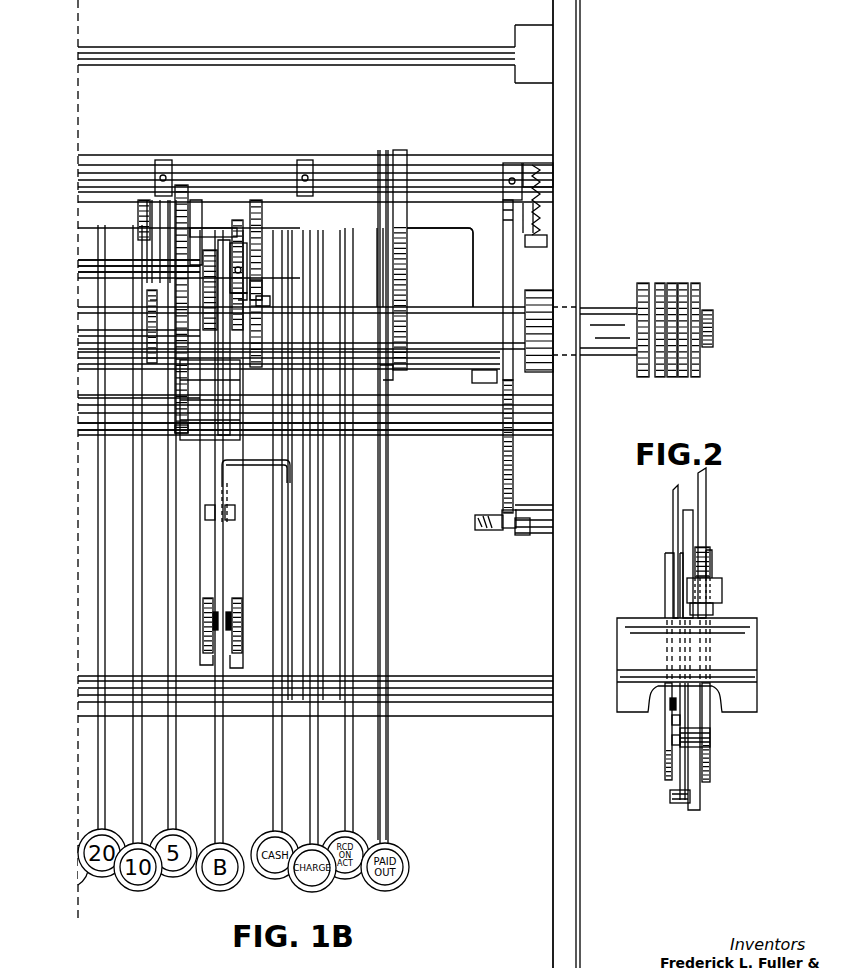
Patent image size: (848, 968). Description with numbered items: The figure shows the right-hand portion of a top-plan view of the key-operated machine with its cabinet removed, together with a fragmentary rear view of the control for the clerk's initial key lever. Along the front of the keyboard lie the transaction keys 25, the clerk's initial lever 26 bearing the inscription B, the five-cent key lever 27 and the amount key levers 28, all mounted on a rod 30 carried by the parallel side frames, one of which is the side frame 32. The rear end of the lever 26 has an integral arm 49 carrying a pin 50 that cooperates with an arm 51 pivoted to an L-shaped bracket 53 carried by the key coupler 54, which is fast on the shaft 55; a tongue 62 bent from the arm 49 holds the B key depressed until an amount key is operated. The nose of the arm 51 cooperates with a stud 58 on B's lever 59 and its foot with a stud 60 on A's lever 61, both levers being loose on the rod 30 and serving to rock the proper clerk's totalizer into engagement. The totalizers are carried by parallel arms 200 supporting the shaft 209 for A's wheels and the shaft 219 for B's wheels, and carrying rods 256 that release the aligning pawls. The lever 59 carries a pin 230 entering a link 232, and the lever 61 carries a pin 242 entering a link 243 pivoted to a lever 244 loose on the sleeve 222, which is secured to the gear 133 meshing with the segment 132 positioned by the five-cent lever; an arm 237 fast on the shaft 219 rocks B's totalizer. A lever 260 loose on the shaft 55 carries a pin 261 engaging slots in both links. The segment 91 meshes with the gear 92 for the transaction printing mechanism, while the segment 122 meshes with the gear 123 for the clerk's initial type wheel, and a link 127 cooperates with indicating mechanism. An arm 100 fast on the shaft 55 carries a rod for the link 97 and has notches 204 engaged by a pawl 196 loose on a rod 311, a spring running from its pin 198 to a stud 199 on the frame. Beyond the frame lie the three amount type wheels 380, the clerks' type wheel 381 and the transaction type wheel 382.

In FIG. 1B, the parallel arms 200 is at (183, 200).
In FIG. 1B, the rods 256 is at (113, 262).
In FIG. 1B, the arm 237 is at (237, 250).
In FIG. 1B, the segment 122 is at (257, 240).
In FIG. 1B, the gear 123 is at (262, 292).
In FIG. 1B, the link 127 is at (268, 303).
In FIG. 1B, the segment 132 is at (150, 284).
In FIG. 1B, the gear 133 is at (150, 302).
In FIG. 1B, the shaft 219 is at (90, 272).
In FIG. 1B, the sleeve 222 is at (117, 333).
In FIG. 1B, the shaft 209 is at (90, 400).
In FIG. 1B, the lever 244 is at (185, 433).
In FIG. 1B, the key coupler 54 is at (476, 231).
In FIG. 2, the key coupler 54 is at (757, 638).
In FIG. 1B, the arm 100 is at (505, 272).
In FIG. 1B, the segment 91 is at (398, 283).
In FIG. 1B, the gear 92 is at (397, 302).
In FIG. 1B, the link 97 is at (383, 370).
In FIG. 1B, the shaft 55 is at (437, 367).
In FIG. 1B, the rod 30 is at (455, 433).
In FIG. 1B, the notches 204 is at (506, 470).
In FIG. 1B, the pawl 196 is at (505, 512).
In FIG. 1B, the stud 199 is at (545, 505).
In FIG. 1B, the rod 311 is at (487, 522).
In FIG. 1B, the pin 198 is at (518, 525).
In FIG. 1B, the side frame 32 is at (556, 597).
In FIG. 1B, the lever 260 is at (262, 472).
In FIG. 1B, the pin 261 is at (215, 512).
In FIG. 1B, the pin 242 is at (210, 602).
In FIG. 1B, the lever 61 is at (208, 618).
In FIG. 2, the lever 61 is at (710, 748).
In FIG. 1B, the link 243 is at (212, 660).
In FIG. 2, the link 243 is at (706, 484).
In FIG. 1B, the pin 230 is at (235, 608).
In FIG. 1B, the lever 59 is at (243, 618).
In FIG. 2, the lever 59 is at (665, 768).
In FIG. 1B, the link 232 is at (238, 660).
In FIG. 2, the link 232 is at (672, 499).
In FIG. 1B, the transaction type wheel 382 is at (643, 284).
In FIG. 1B, the clerks' type wheel 381 is at (659, 283).
In FIG. 1B, the amount type wheels 380 is at (684, 283).
In FIG. 1B, the amount key levers 28 is at (137, 788).
In FIG. 1B, the 5 cent key lever 27 is at (172, 782).
In FIG. 1B, the clerk's initial lever 26 is at (222, 768).
In FIG. 2, the clerk's initial lever 26 is at (693, 520).
In FIG. 1B, the transaction keys 25 is at (385, 777).
In FIG. 2, the L-shaped bracket 53 is at (712, 595).
In FIG. 2, the tongue 62 is at (670, 704).
In FIG. 2, the arm 51 is at (674, 720).
In FIG. 2, the stud 58 is at (675, 740).
In FIG. 2, the stud 60 is at (700, 735).
In FIG. 2, the arm 49 is at (690, 788).
In FIG. 2, the pin 50 is at (670, 800).